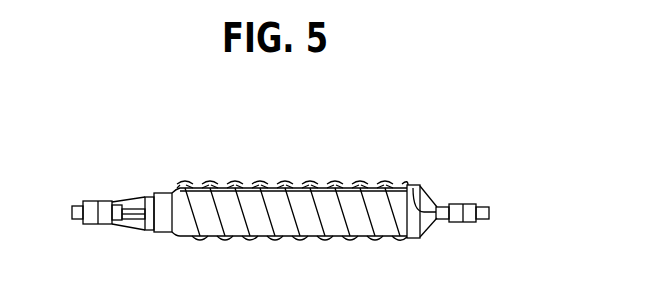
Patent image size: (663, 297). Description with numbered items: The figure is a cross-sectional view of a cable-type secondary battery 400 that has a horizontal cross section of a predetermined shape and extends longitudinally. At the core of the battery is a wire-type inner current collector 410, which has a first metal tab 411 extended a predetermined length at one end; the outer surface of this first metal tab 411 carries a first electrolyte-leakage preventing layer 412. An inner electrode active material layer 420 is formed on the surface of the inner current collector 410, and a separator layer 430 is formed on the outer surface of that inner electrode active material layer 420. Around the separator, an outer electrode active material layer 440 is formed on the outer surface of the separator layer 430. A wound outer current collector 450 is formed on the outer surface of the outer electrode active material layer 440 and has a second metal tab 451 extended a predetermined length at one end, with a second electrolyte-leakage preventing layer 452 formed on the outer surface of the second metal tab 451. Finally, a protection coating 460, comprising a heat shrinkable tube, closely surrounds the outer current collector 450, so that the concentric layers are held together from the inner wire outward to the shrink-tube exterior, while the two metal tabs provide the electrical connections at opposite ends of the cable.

The cable-type secondary battery 400 is at (278, 188).
The wire-type inner current collector 410 is at (128, 226).
The first metal tab 411 is at (67, 199).
The first electrolyte-leakage preventing layer 412 is at (95, 201).
The inner electrode active material layer 420 is at (135, 198).
The separator layer 430 is at (160, 198).
The outer electrode active material layer 440 is at (292, 197).
The outer current collector 450 is at (290, 199).
The protection coating 460 is at (428, 197).
The second metal tab 451 is at (490, 199).
The second electrolyte-leakage preventing layer 452 is at (464, 201).